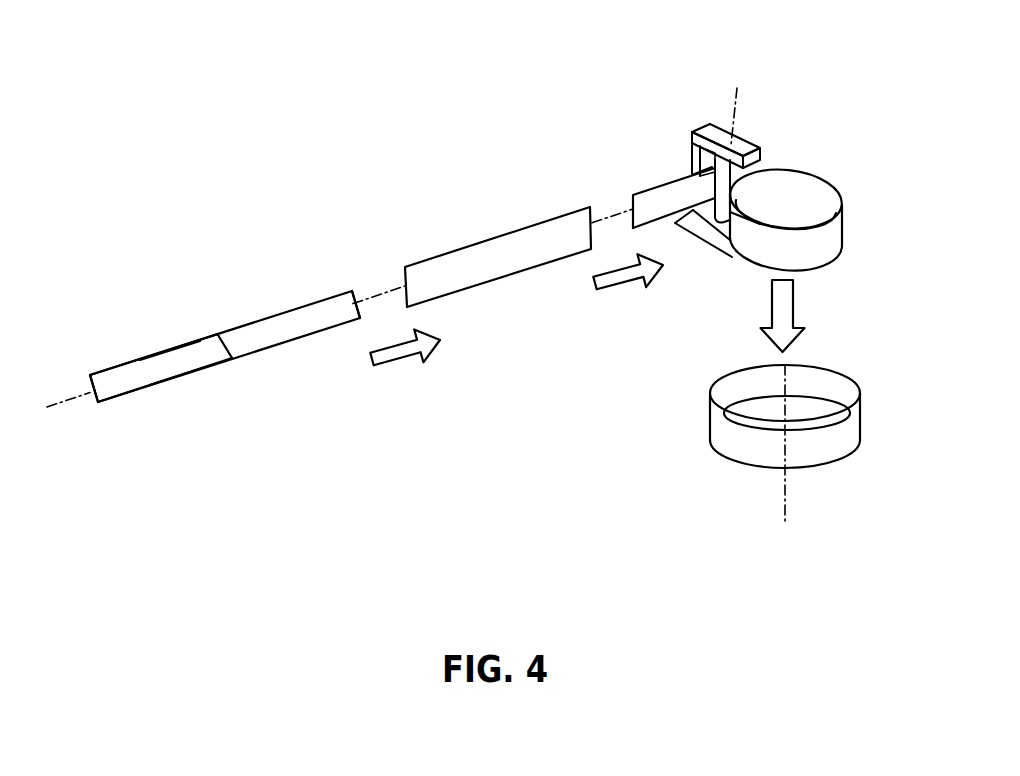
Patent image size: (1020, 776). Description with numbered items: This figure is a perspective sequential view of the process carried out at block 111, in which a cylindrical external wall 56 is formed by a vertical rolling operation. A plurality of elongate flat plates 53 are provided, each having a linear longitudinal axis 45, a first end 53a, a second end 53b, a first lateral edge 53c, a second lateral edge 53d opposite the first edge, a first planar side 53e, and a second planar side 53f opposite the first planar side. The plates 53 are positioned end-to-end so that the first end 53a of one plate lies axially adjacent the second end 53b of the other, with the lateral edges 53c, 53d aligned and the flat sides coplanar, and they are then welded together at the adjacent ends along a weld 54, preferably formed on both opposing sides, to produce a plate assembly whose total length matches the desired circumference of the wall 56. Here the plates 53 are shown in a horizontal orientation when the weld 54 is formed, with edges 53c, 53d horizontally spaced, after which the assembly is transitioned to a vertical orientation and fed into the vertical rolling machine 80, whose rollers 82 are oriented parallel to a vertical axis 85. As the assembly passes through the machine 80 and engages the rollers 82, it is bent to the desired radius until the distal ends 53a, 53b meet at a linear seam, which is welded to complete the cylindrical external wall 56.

The block 111 is at (304, 72).
The longitudinal axis 45 is at (74, 399).
The elongate flat plate 53 is at (290, 328).
The first end 53a is at (97, 410).
The second end 53b is at (358, 290).
The first lateral edge 53c is at (125, 355).
The second lateral edge 53d is at (153, 400).
The first planar side 53e is at (163, 363).
The second planar side 53f is at (185, 392).
The weld 54 is at (229, 330).
The vertical rolling machine 80 is at (678, 125).
The rollers 82 is at (710, 160).
The vertical axis 85 is at (737, 92).
The cylindrical external wall 56 is at (866, 464).